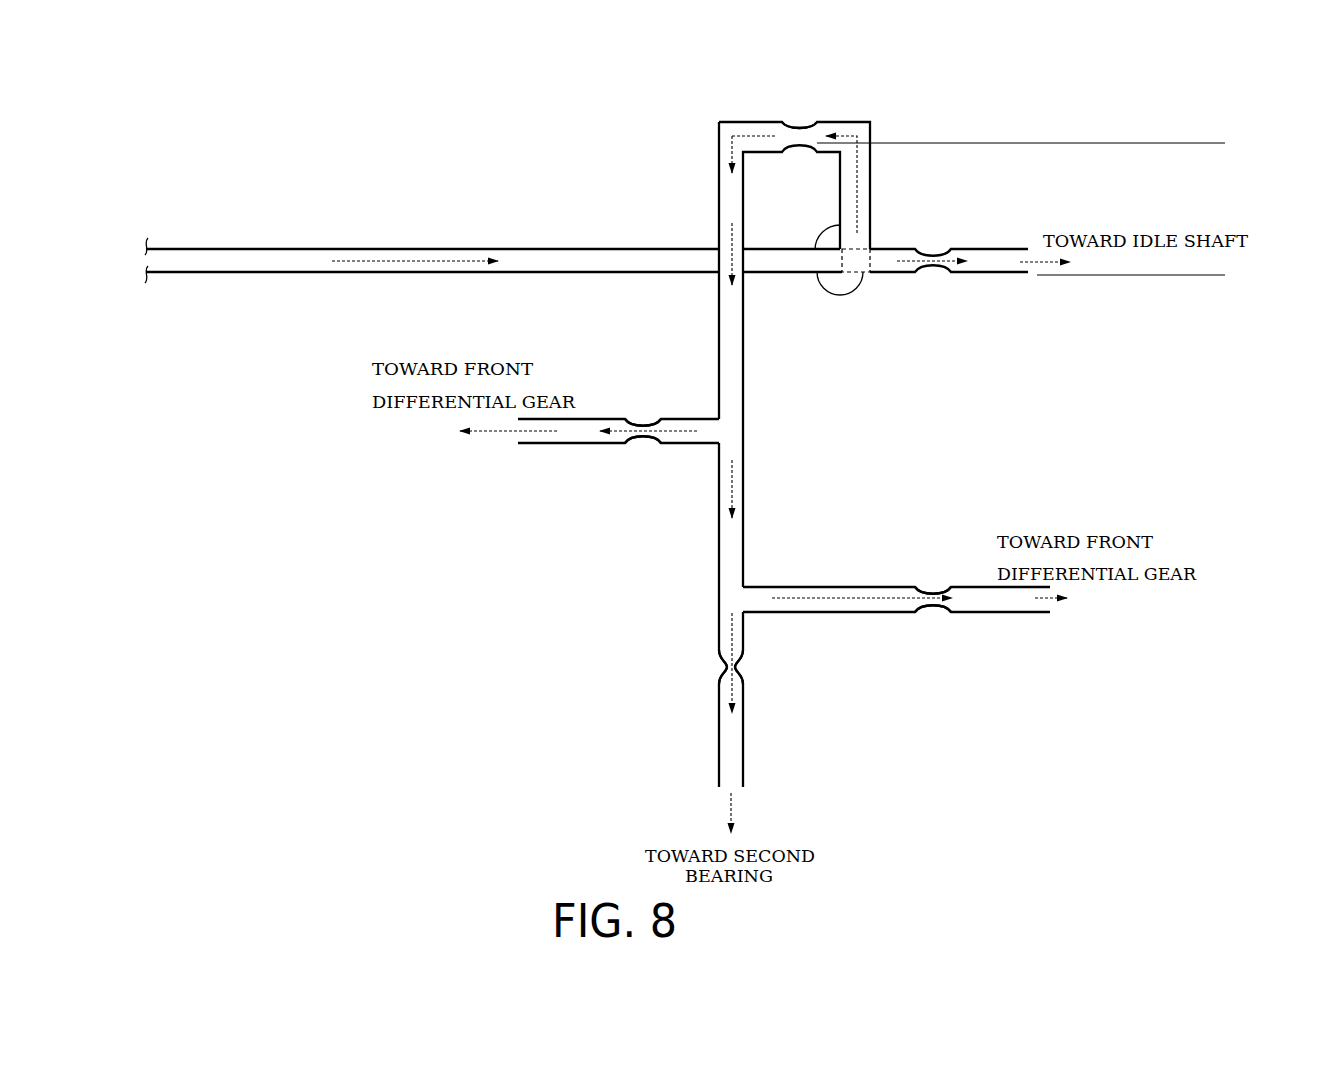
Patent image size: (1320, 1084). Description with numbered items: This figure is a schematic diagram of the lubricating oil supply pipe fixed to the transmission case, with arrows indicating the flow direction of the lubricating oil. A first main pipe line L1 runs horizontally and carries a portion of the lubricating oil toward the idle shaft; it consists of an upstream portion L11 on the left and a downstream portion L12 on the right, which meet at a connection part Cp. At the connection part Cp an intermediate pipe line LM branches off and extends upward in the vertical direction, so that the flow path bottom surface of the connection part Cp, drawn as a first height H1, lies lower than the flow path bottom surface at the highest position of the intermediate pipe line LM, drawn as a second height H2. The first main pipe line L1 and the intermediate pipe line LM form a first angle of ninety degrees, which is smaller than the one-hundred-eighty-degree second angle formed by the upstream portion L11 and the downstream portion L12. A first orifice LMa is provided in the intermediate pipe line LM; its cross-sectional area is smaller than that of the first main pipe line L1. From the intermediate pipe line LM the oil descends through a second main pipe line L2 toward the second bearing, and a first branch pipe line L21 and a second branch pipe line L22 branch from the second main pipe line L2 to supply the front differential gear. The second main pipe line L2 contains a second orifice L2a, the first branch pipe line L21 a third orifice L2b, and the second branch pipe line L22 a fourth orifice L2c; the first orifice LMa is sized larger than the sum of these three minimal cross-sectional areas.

The upstream portion L11 is at (445, 247).
The first main pipe line L1 is at (1012, 228).
The downstream portion L12 is at (1002, 266).
The first height H1 is at (1149, 280).
The second height H2 is at (1039, 149).
The intermediate pipe line LM is at (824, 102).
The first orifice LMa is at (799, 124).
The connection part Cp is at (868, 266).
The second main pipe line L2 is at (753, 507).
The second orifice L2a is at (737, 664).
The first branch pipe line L21 is at (545, 436).
The third orifice L2b is at (635, 441).
The second branch pipe line L22 is at (1010, 605).
The fourth orifice L2c is at (930, 586).